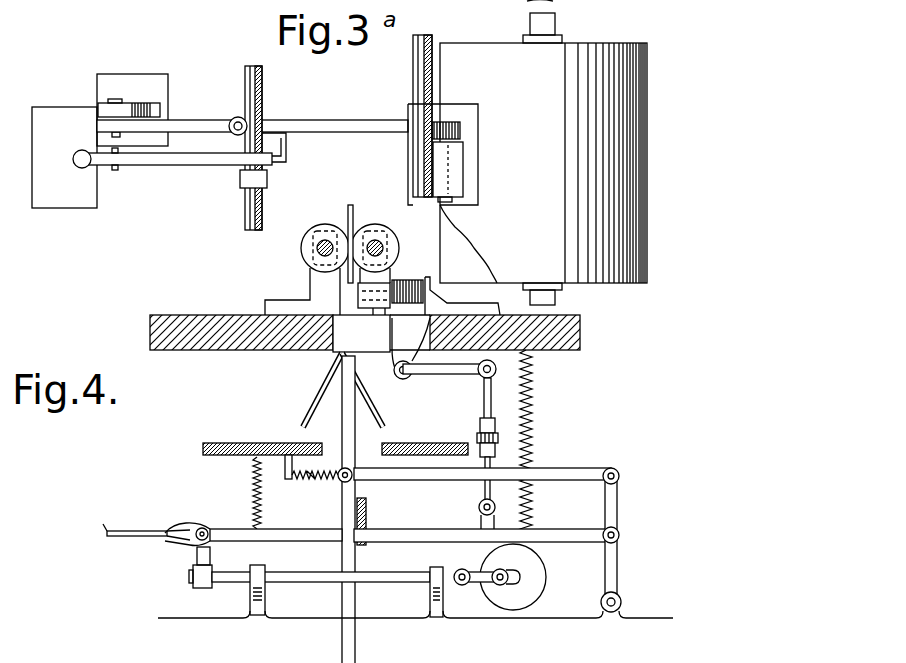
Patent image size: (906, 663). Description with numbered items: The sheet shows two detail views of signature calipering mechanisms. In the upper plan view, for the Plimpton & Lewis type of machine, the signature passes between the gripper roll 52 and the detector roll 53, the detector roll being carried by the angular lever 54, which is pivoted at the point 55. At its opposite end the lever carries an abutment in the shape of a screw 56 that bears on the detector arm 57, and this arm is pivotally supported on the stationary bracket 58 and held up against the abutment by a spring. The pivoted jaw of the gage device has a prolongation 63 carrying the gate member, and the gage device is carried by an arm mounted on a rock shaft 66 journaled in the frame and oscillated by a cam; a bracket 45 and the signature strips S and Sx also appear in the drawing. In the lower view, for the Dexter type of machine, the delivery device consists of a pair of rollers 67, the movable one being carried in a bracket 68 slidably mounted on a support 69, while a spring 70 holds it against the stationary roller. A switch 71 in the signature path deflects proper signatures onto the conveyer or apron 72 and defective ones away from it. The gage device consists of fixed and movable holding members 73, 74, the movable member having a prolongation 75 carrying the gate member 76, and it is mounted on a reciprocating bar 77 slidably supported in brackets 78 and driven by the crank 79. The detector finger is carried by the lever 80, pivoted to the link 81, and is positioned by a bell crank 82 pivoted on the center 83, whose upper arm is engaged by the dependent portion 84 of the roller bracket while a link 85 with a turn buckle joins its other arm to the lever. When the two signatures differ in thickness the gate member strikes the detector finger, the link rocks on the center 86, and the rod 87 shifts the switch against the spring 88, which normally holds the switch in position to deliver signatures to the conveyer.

In FIG. 3A, the bracket 45 is at (468, 118).
In FIG. 3A, the gripper roll 52 is at (543, 152).
In FIG. 3A, the detector roll 53 is at (463, 168).
In FIG. 3A, the angular lever 54 is at (365, 116).
In FIG. 3A, the pivot point 55 is at (437, 24).
In FIG. 3A, the screw 56 is at (279, 103).
In FIG. 3A, the detector arm 57 is at (185, 123).
In FIG. 3A, the stationary bracket 58 is at (146, 100).
In FIG. 3A, the prolongation 63 is at (278, 164).
In FIG. 3A, the rock shaft 66 is at (263, 201).
In FIG. 3A, the rollers 67 is at (362, 224).
In FIG. 3A, the bracket 68 is at (389, 282).
In FIG. 3A, the support 69 is at (439, 291).
In FIG. 3A, the spring 70 is at (421, 281).
In FIG. 4, the switch 71 is at (322, 383).
In FIG. 4, the conveyer or apron 72 is at (427, 435).
In FIG. 4, the fixed holding member 73 is at (180, 543).
In FIG. 4, the movable holding member 74 is at (180, 524).
In FIG. 4, the prolongation 75 is at (240, 521).
In FIG. 4, the gate member 76 is at (342, 511).
In FIG. 4, the reciprocating bar 77 is at (292, 583).
In FIG. 4, the brackets 78 is at (250, 596).
In FIG. 4, the crank 79 is at (496, 571).
In FIG. 4, the lever 80 is at (432, 531).
In FIG. 4, the link 81 is at (617, 513).
In FIG. 4, the bell crank 82 is at (429, 375).
In FIG. 4, the center 83 is at (401, 373).
In FIG. 3A, the dependent portion 84 is at (378, 331).
In FIG. 4, the link 85 is at (484, 402).
In FIG. 4, the center 86 is at (621, 601).
In FIG. 4, the rod 87 is at (529, 472).
In FIG. 4, the spring 88 is at (324, 478).
In FIG. 3A, the strip S is at (340, 271).
In FIG. 3A, the strip end Sx is at (76, 200).
In FIG. 4, the strip end Sx is at (91, 523).